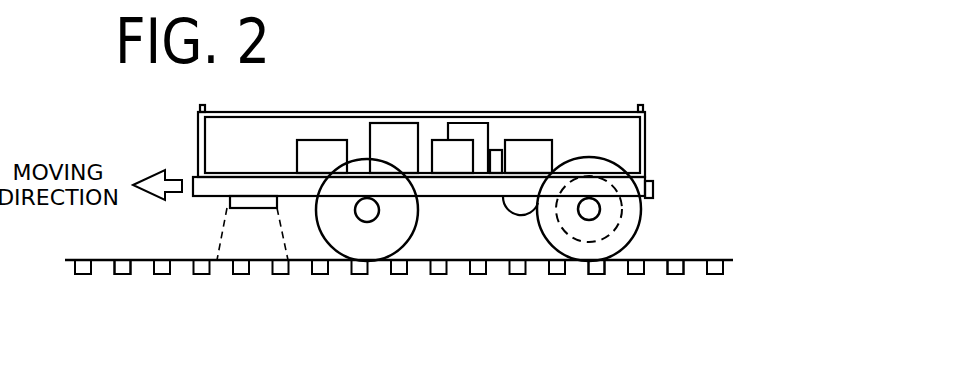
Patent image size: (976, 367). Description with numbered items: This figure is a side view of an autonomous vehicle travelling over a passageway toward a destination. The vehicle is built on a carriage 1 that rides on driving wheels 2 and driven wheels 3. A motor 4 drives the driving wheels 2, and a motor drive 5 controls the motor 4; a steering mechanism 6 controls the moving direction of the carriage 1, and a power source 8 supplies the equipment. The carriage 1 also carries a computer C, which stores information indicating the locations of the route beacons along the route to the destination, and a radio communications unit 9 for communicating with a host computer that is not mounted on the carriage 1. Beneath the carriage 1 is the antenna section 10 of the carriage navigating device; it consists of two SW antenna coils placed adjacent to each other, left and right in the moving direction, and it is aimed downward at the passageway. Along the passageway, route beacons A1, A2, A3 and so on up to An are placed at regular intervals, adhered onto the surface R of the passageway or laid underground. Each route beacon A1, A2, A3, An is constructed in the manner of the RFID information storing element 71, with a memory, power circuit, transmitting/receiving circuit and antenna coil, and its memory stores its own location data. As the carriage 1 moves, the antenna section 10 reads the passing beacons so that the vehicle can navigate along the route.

The carriage 1 is at (655, 186).
The driving wheels 2 is at (630, 230).
The driven wheels 3 is at (400, 226).
The motor 4 is at (523, 213).
The motor drive 5 is at (470, 130).
The steering mechanism 6 is at (608, 182).
The power source 8 is at (532, 160).
The radio communications unit 9 is at (443, 150).
The antenna section 10 is at (231, 200).
The computer C is at (387, 132).
The surface R is at (698, 260).
The information storing element 71 is at (404, 311).
The route beacon A1 is at (675, 270).
The route beacon A2 is at (635, 270).
The route beacon A3 is at (595, 270).
The route beacon An is at (121, 270).